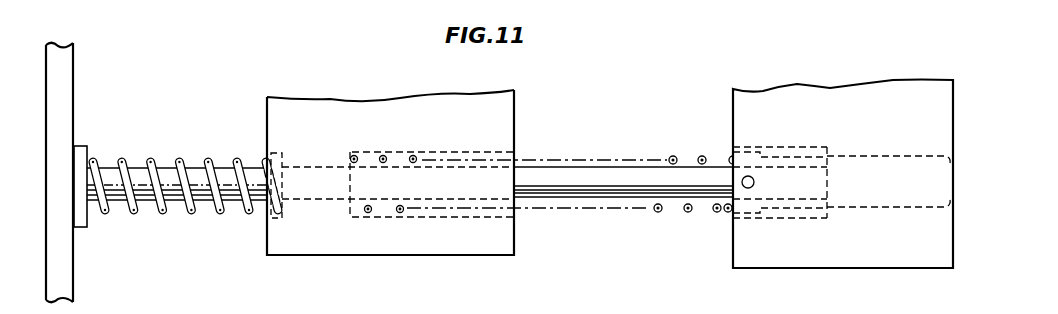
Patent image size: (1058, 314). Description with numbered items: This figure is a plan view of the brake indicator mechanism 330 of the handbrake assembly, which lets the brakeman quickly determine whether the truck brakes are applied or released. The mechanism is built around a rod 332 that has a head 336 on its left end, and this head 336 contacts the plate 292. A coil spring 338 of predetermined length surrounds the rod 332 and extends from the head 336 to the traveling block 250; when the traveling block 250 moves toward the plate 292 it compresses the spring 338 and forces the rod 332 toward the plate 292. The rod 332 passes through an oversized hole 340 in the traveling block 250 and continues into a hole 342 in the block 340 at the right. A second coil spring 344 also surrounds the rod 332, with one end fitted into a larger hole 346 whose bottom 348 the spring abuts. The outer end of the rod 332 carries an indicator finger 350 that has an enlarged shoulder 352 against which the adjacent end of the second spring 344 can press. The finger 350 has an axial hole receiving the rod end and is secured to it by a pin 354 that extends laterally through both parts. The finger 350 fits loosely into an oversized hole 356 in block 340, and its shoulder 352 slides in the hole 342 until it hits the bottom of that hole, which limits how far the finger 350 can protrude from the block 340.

The plate 292 is at (65, 74).
The head 336 is at (80, 222).
The coil spring 338 is at (150, 163).
The rod 332 is at (208, 200).
The traveling block 250 is at (367, 242).
The block 340 is at (315, 203).
The bottom 348 is at (350, 158).
The larger hole 346 is at (437, 213).
The second coil spring 344 is at (673, 156).
The brake indicator mechanism 330 is at (600, 222).
The pin 354 is at (743, 187).
The hole 342 is at (788, 212).
The enlarged shoulder 352 is at (748, 153).
The indicator finger 350 is at (870, 175).
The oversized hole 356 is at (872, 212).